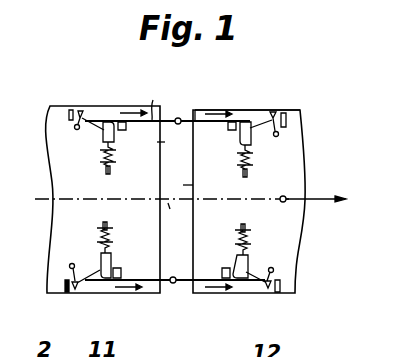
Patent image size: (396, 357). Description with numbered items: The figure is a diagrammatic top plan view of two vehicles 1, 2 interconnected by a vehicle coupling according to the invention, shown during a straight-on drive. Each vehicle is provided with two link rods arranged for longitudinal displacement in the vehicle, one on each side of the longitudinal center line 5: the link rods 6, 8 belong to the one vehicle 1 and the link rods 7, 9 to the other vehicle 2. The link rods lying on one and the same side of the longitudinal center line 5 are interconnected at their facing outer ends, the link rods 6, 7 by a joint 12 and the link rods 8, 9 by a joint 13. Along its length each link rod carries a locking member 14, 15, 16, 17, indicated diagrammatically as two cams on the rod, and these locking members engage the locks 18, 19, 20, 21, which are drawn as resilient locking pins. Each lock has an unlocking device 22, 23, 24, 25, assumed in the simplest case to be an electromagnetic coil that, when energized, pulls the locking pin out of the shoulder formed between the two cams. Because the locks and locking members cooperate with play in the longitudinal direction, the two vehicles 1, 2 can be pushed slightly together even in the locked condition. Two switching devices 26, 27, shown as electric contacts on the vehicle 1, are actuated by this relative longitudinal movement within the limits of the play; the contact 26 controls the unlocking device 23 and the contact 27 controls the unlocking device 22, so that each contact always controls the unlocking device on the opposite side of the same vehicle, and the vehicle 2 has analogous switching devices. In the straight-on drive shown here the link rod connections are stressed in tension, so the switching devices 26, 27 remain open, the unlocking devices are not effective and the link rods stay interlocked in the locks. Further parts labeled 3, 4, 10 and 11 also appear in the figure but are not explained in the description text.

The vehicle 1 is at (292, 110).
The vehicle 2 is at (55, 104).
The gap between blocks 3 is at (179, 184).
The upper connecting rod section 4 is at (169, 144).
The longitudinal center line 5 is at (190, 214).
The link rod 6 is at (198, 112).
The link rod 7 is at (153, 106).
The link rod 8 is at (198, 280).
The link rod 9 is at (147, 280).
The upper channel wall 10 is at (228, 110).
The upper channel left block 11 is at (121, 107).
The joint 12 is at (178, 116).
The joint 13 is at (174, 277).
The locking member 14 is at (258, 118).
The locking member 15 is at (250, 268).
The locking member 16 is at (96, 118).
The locking member 17 is at (90, 275).
The lock 18 is at (252, 142).
The lock 19 is at (237, 265).
The lock 20 is at (102, 140).
The lock 21 is at (111, 261).
The unlocking device 22 is at (242, 158).
The unlocking device 23 is at (241, 234).
The unlocking device 24 is at (116, 158).
The unlocking device 25 is at (104, 236).
The switching device 26 is at (288, 120).
The switching device 27 is at (280, 287).